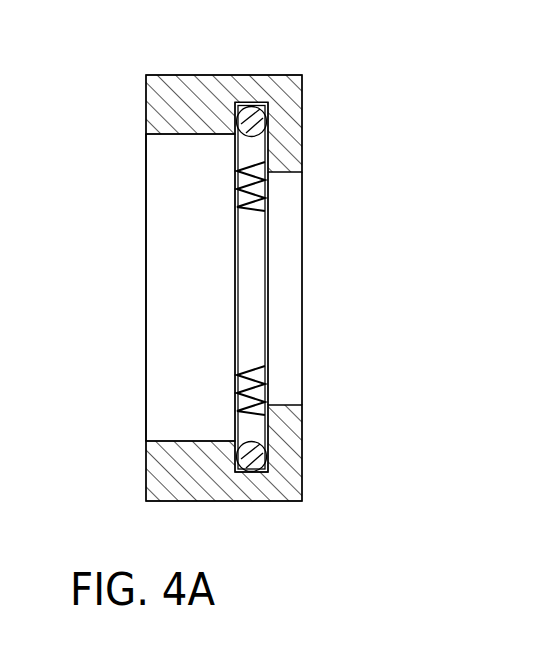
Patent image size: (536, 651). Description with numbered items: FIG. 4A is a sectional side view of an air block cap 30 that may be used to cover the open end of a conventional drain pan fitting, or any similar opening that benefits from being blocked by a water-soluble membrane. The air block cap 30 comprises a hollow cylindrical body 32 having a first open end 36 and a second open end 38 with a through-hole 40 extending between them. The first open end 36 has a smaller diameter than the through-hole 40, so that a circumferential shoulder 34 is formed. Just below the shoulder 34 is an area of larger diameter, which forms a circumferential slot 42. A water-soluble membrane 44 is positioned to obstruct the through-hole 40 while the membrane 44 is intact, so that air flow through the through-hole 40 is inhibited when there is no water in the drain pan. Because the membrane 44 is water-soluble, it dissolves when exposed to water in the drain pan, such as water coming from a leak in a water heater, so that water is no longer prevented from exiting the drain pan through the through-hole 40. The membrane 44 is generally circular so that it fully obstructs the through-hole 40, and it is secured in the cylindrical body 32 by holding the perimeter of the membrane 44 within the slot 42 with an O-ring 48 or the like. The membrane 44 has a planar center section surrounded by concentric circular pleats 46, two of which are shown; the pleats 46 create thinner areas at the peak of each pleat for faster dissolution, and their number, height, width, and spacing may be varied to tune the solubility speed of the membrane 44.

The air block cap 30 is at (348, 59).
The hollow cylindrical body 32 is at (208, 75).
The circumferential shoulder 34 is at (297, 442).
The first open end 36 is at (319, 344).
The second open end 38 is at (131, 378).
The through-hole 40 is at (159, 307).
The circumferential slot 42 is at (258, 472).
The water-soluble membrane 44 is at (268, 272).
The concentric circular pleats 46 is at (240, 401).
The O-ring 48 is at (262, 123).